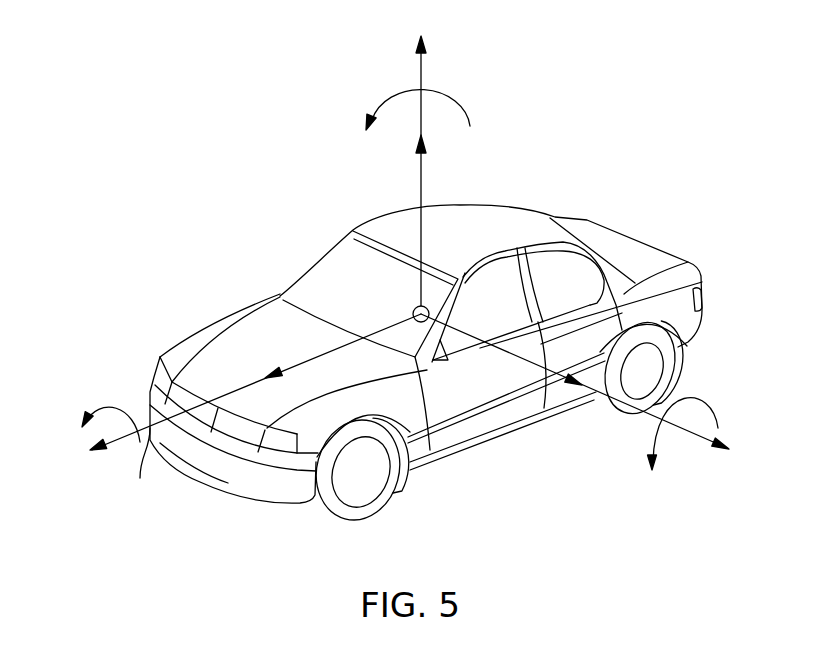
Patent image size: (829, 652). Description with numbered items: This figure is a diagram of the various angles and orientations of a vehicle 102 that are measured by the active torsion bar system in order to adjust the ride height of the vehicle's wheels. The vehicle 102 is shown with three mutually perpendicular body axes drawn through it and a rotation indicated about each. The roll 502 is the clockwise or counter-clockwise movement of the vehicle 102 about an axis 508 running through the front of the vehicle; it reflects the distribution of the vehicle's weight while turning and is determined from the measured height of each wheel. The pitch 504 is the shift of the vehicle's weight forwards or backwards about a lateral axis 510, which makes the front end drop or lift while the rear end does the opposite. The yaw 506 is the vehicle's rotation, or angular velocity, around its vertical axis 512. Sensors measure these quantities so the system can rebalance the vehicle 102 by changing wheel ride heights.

The vehicle 102 is at (445, 457).
The roll 502 is at (120, 405).
The pitch 504 is at (653, 437).
The yaw 506 is at (457, 95).
The axis through the front of the vehicle 508 is at (152, 430).
The lateral axis 510 is at (646, 420).
The vertical axis 512 is at (422, 192).